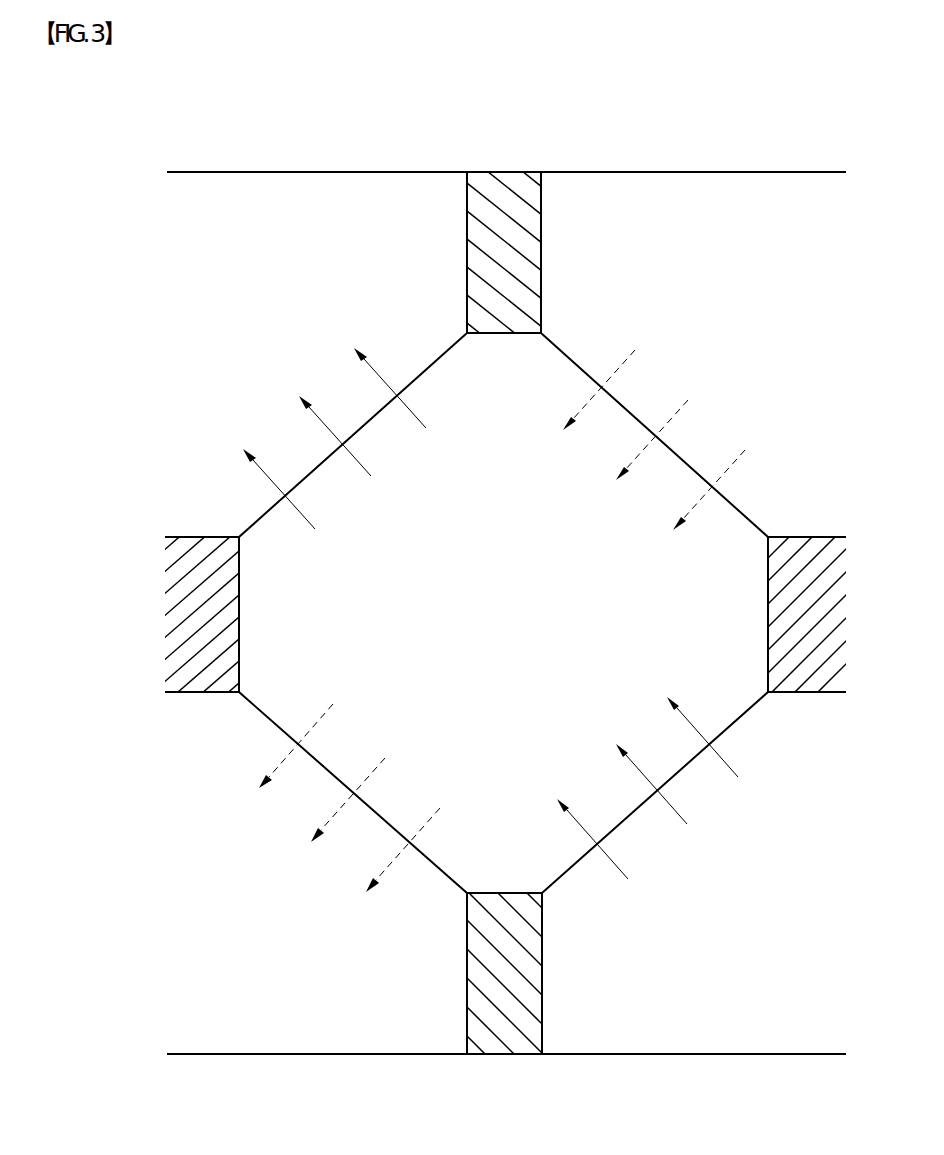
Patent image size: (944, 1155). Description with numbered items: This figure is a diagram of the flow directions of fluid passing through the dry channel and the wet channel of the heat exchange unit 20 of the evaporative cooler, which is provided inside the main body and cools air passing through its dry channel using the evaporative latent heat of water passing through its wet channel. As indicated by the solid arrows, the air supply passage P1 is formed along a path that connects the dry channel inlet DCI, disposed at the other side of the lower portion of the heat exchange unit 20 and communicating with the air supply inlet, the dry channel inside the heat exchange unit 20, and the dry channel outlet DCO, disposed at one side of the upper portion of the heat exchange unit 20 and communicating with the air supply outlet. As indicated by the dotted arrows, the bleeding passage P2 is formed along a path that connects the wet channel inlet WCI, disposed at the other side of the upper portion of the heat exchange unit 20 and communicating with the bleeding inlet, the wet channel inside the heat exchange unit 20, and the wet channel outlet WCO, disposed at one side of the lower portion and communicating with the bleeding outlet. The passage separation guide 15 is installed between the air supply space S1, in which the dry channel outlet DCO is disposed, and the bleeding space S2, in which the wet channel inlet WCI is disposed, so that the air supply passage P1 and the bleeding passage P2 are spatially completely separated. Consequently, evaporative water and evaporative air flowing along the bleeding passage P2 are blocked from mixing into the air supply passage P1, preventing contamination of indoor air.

The passage separation guide 15 is at (522, 250).
The heat exchange unit 20 is at (518, 624).
The air supply space S1 is at (319, 279).
The bleeding space S2 is at (720, 279).
The air supply passage P1 is at (490, 613).
The bleeding passage P2 is at (502, 621).
The dry channel outlet DCO is at (271, 364).
The dry channel inlet DCI is at (704, 859).
The wet channel inlet WCI is at (727, 379).
The wet channel outlet WCO is at (281, 861).